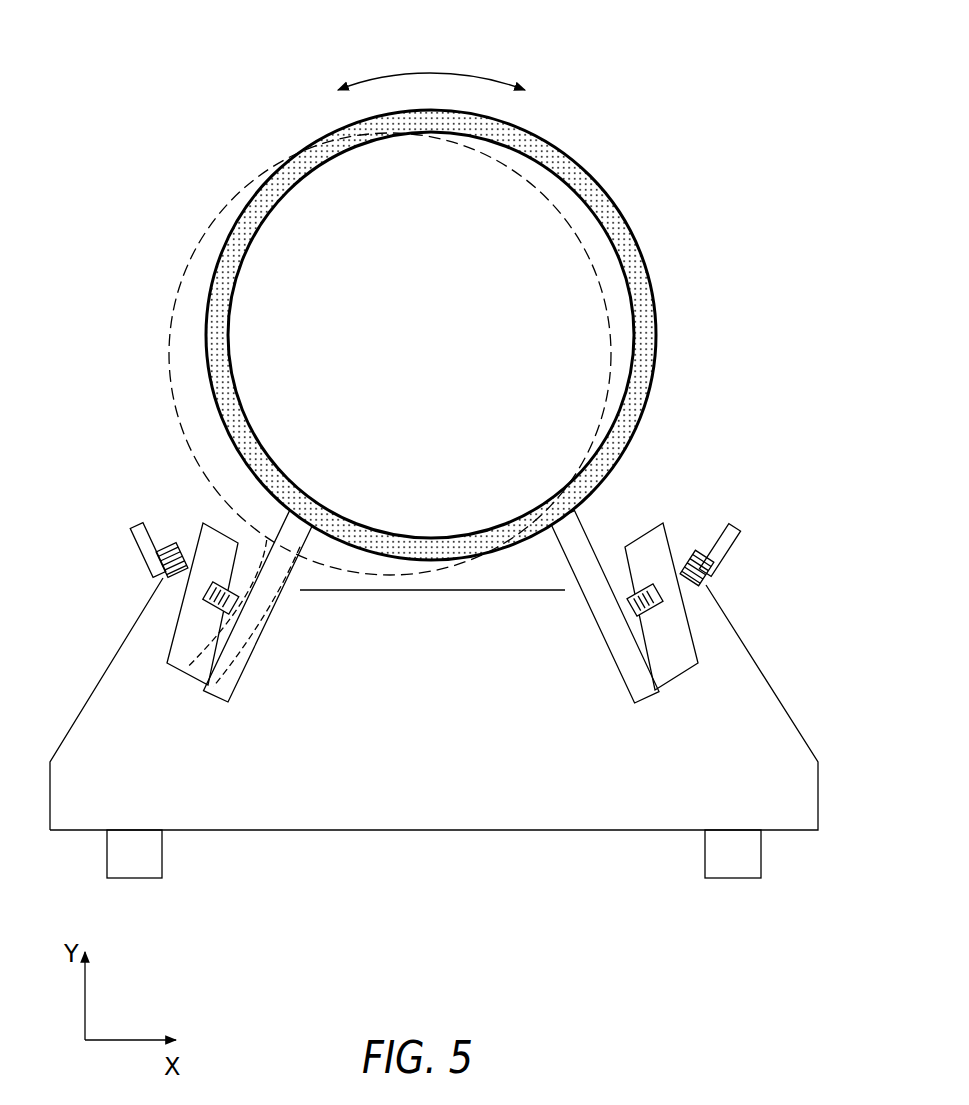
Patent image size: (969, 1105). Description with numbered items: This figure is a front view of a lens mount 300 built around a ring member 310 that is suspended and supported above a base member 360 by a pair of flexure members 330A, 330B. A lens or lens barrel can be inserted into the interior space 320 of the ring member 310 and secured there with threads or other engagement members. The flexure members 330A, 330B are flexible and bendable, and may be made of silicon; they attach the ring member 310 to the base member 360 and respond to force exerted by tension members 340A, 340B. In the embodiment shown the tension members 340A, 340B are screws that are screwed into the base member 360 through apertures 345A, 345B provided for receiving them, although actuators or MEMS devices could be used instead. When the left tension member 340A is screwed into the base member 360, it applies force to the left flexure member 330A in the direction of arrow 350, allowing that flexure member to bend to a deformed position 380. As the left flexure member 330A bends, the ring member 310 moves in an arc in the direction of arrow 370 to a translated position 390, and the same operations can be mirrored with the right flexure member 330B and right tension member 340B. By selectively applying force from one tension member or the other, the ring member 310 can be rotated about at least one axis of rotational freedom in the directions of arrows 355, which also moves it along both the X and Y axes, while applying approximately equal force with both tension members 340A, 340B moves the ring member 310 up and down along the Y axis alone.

The lens mount 300 is at (203, 98).
The ring member 310 is at (613, 197).
The interior space 320 is at (452, 309).
The left flexure member 330A is at (267, 533).
The right flexure member 330B is at (596, 524).
The left tension member 340A is at (138, 549).
The right tension member 340B is at (736, 550).
The aperture 345A is at (152, 585).
The aperture 345B is at (713, 586).
The arrow 350 is at (122, 530).
The arrows 355 is at (431, 53).
The base member 360 is at (819, 814).
The arrow 370 is at (186, 420).
The deformed position 380 is at (242, 668).
The translated position 390 is at (168, 336).